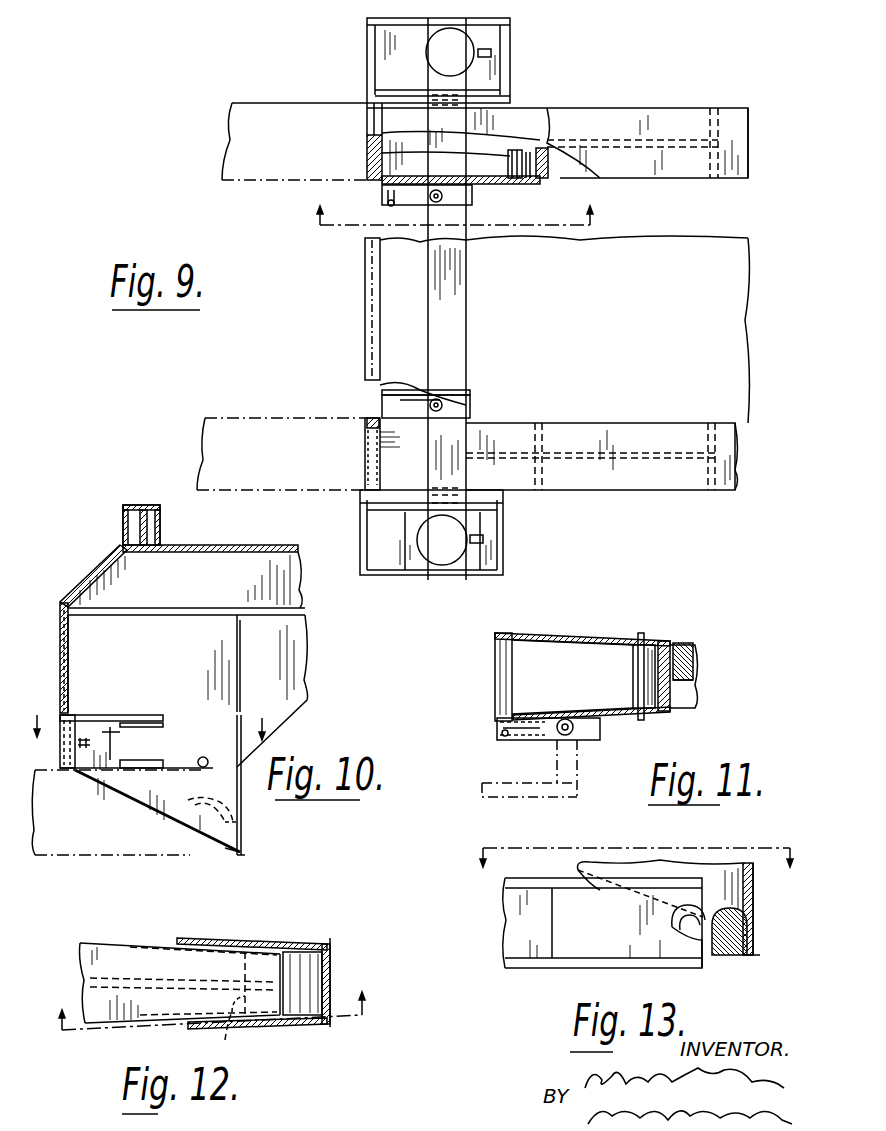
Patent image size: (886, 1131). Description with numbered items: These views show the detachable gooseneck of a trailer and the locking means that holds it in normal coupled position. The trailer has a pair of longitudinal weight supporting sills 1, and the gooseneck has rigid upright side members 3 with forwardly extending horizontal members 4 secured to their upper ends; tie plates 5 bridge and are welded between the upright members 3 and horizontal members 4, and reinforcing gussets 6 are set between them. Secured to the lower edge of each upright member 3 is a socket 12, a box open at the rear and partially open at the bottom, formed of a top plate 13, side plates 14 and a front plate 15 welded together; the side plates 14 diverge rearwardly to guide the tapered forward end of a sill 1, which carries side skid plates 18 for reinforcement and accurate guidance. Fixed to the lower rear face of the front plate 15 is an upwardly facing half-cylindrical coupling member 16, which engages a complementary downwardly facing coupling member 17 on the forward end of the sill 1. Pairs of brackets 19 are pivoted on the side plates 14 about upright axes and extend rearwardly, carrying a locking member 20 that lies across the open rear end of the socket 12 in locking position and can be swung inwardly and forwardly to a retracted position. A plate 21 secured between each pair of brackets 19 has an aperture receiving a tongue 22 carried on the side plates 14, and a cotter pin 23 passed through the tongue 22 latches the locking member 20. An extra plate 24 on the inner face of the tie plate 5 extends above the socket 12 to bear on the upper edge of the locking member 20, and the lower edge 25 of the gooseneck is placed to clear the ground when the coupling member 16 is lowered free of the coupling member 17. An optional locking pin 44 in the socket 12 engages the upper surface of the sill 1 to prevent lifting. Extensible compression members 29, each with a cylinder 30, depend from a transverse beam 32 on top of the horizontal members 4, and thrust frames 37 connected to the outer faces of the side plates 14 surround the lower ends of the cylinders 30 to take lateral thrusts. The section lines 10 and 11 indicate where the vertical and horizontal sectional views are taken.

In FIG. 9, the longitudinal sill 1 is at (245, 183).
In FIG. 10, the longitudinal sill 1 is at (85, 860).
In FIG. 13, the longitudinal sill 1 is at (512, 932).
In FIG. 12, the longitudinal sill 1 is at (88, 945).
In FIG. 10, the upright side member 3 is at (152, 663).
In FIG. 9, the horizontal member 4 is at (622, 112).
In FIG. 10, the horizontal member 4 is at (293, 603).
In FIG. 9, the tie plate 5 is at (368, 150).
In FIG. 10, the tie plate 5 is at (95, 582).
In FIG. 9, the reinforcing gusset 6 is at (670, 140).
In FIG. 10, the reinforcing gusset 6 is at (300, 668).
In FIG. 11, the reinforcing gusset 6 is at (698, 668).
In FIG. 9, the section line 10- 10 is at (454, 206).
In FIG. 10, the section line 11- 11 is at (153, 716).
In FIG. 10, the socket 12 is at (249, 814).
In FIG. 11, the socket 12 is at (578, 636).
In FIG. 13, the socket 12 is at (762, 838).
In FIG. 12, the socket 12 is at (287, 943).
In FIG. 9, the top plate 13 is at (398, 130).
In FIG. 12, the top plate 13 is at (212, 1000).
In FIG. 10, the side plate 14 is at (162, 812).
In FIG. 11, the side plate 14 is at (530, 636).
In FIG. 13, the side plate 14 is at (675, 868).
In FIG. 12, the side plate 14 is at (222, 940).
In FIG. 9, the front plate 15 is at (548, 180).
In FIG. 10, the front plate 15 is at (242, 786).
In FIG. 11, the front plate 15 is at (684, 645).
In FIG. 13, the front plate 15 is at (755, 898).
In FIG. 12, the front plate 15 is at (332, 958).
In FIG. 9, the coupling member 16 is at (519, 164).
In FIG. 10, the coupling member 16 is at (240, 832).
In FIG. 11, the coupling member 16 is at (652, 648).
In FIG. 13, the coupling member 16 is at (745, 917).
In FIG. 12, the coupling member 16 is at (307, 960).
In FIG. 10, the coupling member 17 is at (185, 818).
In FIG. 13, the coupling member 17 is at (678, 930).
In FIG. 12, the coupling member 17 is at (225, 1040).
In FIG. 13, the side skid plate 18 is at (588, 958).
In FIG. 12, the side skid plate 18 is at (145, 945).
In FIG. 9, the bracket 19 is at (364, 192).
In FIG. 10, the bracket 19 is at (88, 720).
In FIG. 11, the bracket 19 is at (497, 728).
In FIG. 9, the locking member 20 is at (366, 160).
In FIG. 10, the locking member 20 is at (62, 735).
In FIG. 11, the locking member 20 is at (460, 812).
In FIG. 9, the plate 21 is at (388, 200).
In FIG. 10, the plate 21 is at (114, 738).
In FIG. 11, the plate 21 is at (500, 738).
In FIG. 9, the tongue 22 is at (440, 200).
In FIG. 11, the tongue 22 is at (500, 735).
In FIG. 9, the cotter pin 23 is at (391, 205).
In FIG. 11, the cotter pin 23 is at (512, 745).
In FIG. 9, the extra plate 24 is at (372, 135).
In FIG. 10, the extra plate 24 is at (64, 660).
In FIG. 10, the lower edge of the gooseneck 25 is at (228, 852).
In FIG. 13, the lower edge of the gooseneck 25 is at (762, 956).
In FIG. 9, the extensible compression member 29 is at (486, 52).
In FIG. 9, the cylinder 30 is at (462, 72).
In FIG. 9, the transverse beam 32 is at (460, 327).
In FIG. 10, the transverse beam 32 is at (160, 527).
In FIG. 9, the thrust frame 37 is at (368, 40).
In FIG. 10, the locking pin 44 is at (210, 762).
In FIG. 11, the locking pin 44 is at (642, 632).